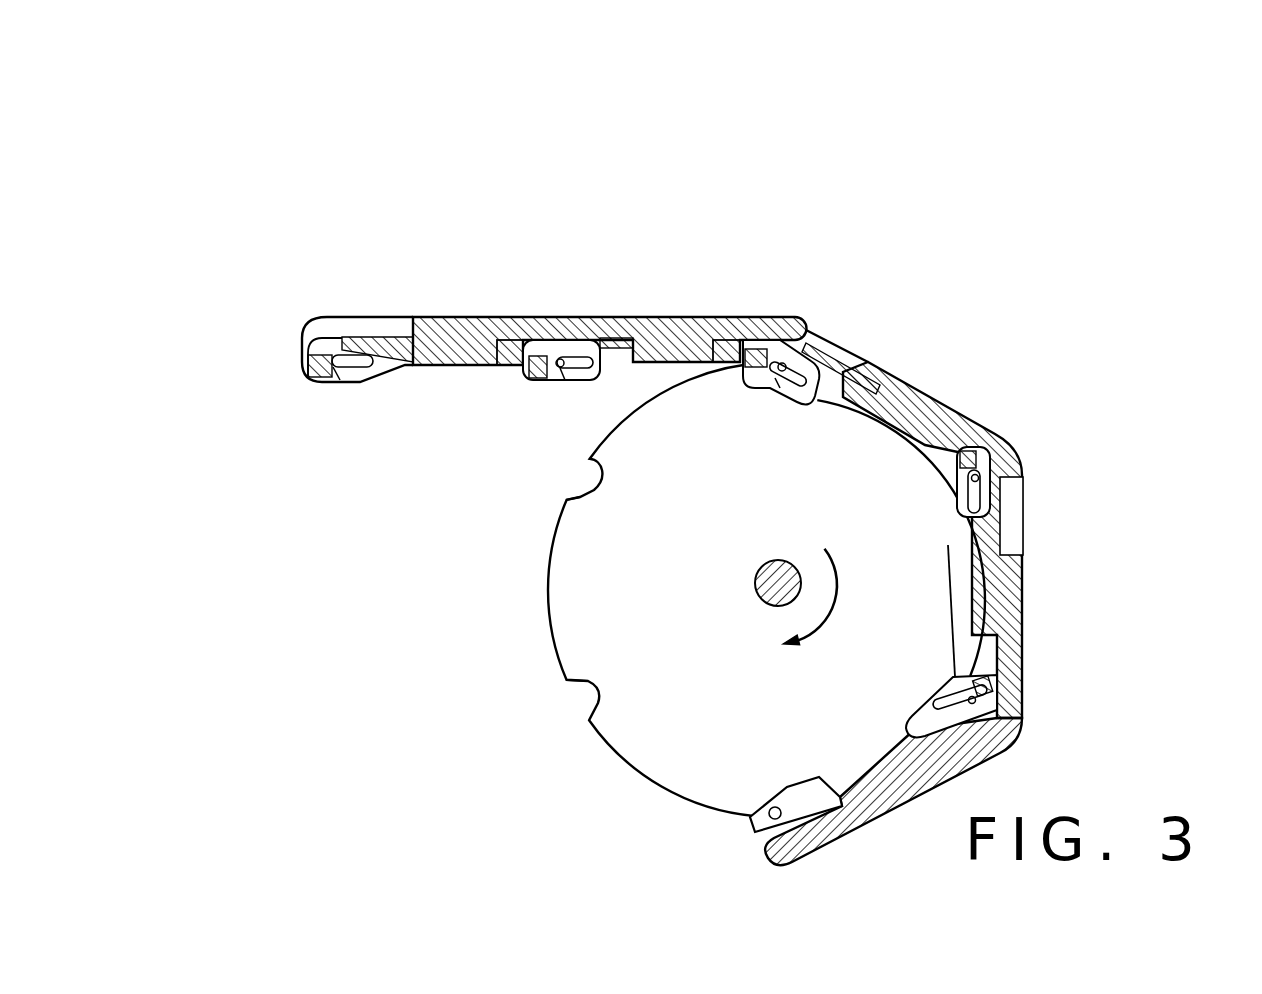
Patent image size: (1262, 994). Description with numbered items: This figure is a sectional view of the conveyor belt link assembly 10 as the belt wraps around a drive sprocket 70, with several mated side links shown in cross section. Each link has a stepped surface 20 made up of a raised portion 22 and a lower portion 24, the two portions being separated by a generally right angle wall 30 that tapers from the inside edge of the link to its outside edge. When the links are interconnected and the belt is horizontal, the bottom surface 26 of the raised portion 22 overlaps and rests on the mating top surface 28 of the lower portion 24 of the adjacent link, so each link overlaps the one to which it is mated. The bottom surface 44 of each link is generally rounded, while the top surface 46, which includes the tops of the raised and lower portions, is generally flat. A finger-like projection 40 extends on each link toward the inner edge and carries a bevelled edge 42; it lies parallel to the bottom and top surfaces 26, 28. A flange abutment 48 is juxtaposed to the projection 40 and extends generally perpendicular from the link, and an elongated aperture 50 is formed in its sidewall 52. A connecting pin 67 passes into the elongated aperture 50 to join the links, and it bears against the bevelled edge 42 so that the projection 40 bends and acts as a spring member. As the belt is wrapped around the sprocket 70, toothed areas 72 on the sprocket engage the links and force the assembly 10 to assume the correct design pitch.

The conveyor belt link assembly 10 is at (956, 179).
The stepped surface 20 is at (729, 438).
The raised portion 22 is at (823, 402).
The lower portion 24 is at (594, 232).
The bottom surface 26 is at (564, 467).
The top surface 28 is at (610, 188).
The right angle wall 30 is at (594, 260).
The finger-like projection 40 is at (604, 532).
The bevelled edge 42 is at (507, 469).
The bottom surface 44 is at (643, 530).
The top surface 46 is at (581, 216).
The flange abutment 48 is at (571, 532).
The elongated aperture 50 is at (660, 522).
The sidewall 52 is at (576, 475).
The connecting pin 67 is at (1157, 473).
The drive sprocket 70 is at (640, 650).
The toothed areas 72 is at (667, 698).